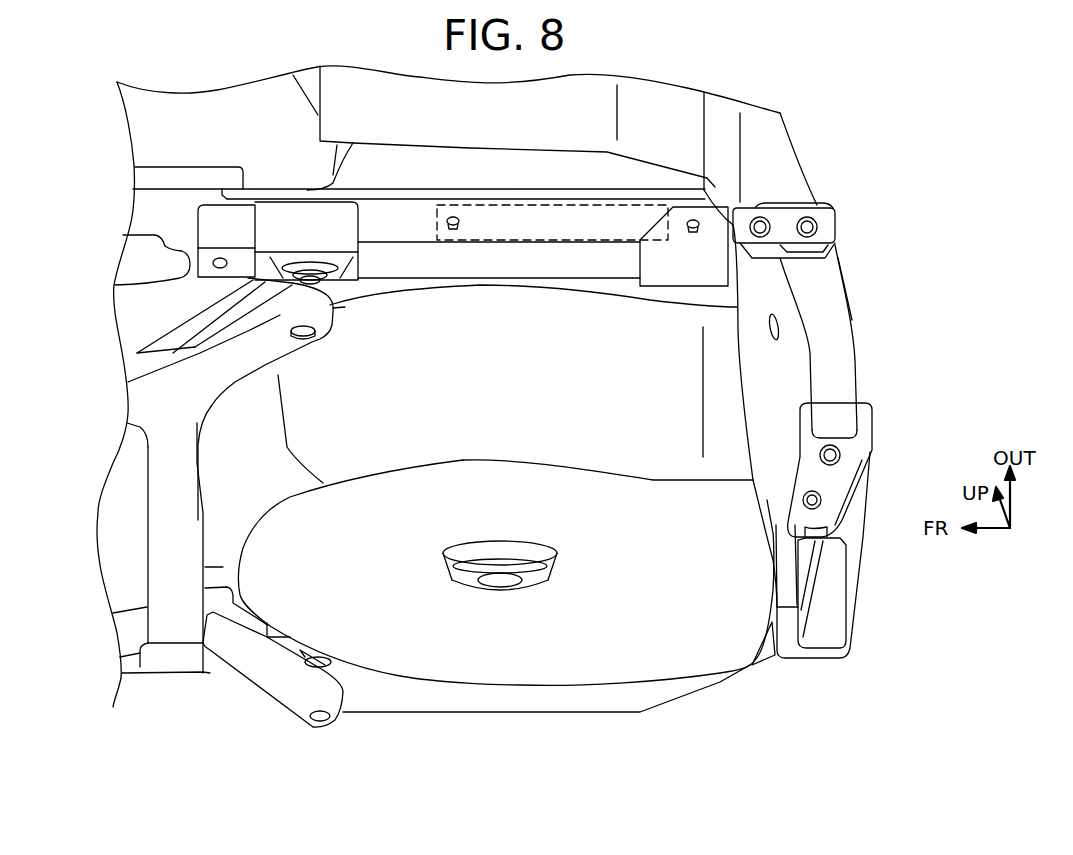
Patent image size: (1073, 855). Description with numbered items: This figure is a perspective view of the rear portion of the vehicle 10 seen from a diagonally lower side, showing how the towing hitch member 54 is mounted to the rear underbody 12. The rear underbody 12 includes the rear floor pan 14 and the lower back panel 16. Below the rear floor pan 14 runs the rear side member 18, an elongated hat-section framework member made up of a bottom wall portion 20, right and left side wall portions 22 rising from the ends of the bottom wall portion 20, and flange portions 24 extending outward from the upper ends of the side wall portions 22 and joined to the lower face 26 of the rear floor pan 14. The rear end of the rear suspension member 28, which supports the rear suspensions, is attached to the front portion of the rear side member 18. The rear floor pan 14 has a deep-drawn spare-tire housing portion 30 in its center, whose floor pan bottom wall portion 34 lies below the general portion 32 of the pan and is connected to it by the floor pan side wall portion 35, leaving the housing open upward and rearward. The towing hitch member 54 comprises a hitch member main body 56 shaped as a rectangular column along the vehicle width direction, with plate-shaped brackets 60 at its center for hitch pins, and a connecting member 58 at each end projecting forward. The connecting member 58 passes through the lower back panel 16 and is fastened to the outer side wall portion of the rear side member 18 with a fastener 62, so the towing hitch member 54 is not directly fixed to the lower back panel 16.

The vehicle 10 is at (833, 131).
The rear underbody 12 is at (578, 728).
The rear floor pan 14 is at (745, 675).
The lower back panel 16 is at (783, 176).
The rear side member 18 is at (535, 185).
The bottom wall portion 20 is at (525, 262).
The side wall portion 22 is at (405, 222).
The flange portion 24 is at (425, 196).
The lower face 26 is at (387, 167).
The rear suspension member 28 is at (253, 677).
The spare-tire housing portion 30 is at (706, 562).
The general portion 32 is at (630, 172).
The floor pan bottom wall portion 34 is at (600, 590).
The floor pan side wall portion 35 is at (545, 396).
The towing hitch member 54 is at (870, 315).
The hitch member main body 56 is at (830, 365).
The connecting member 58 is at (825, 222).
The plate-shaped bracket 60 is at (855, 440).
The fastener 62 is at (460, 226).